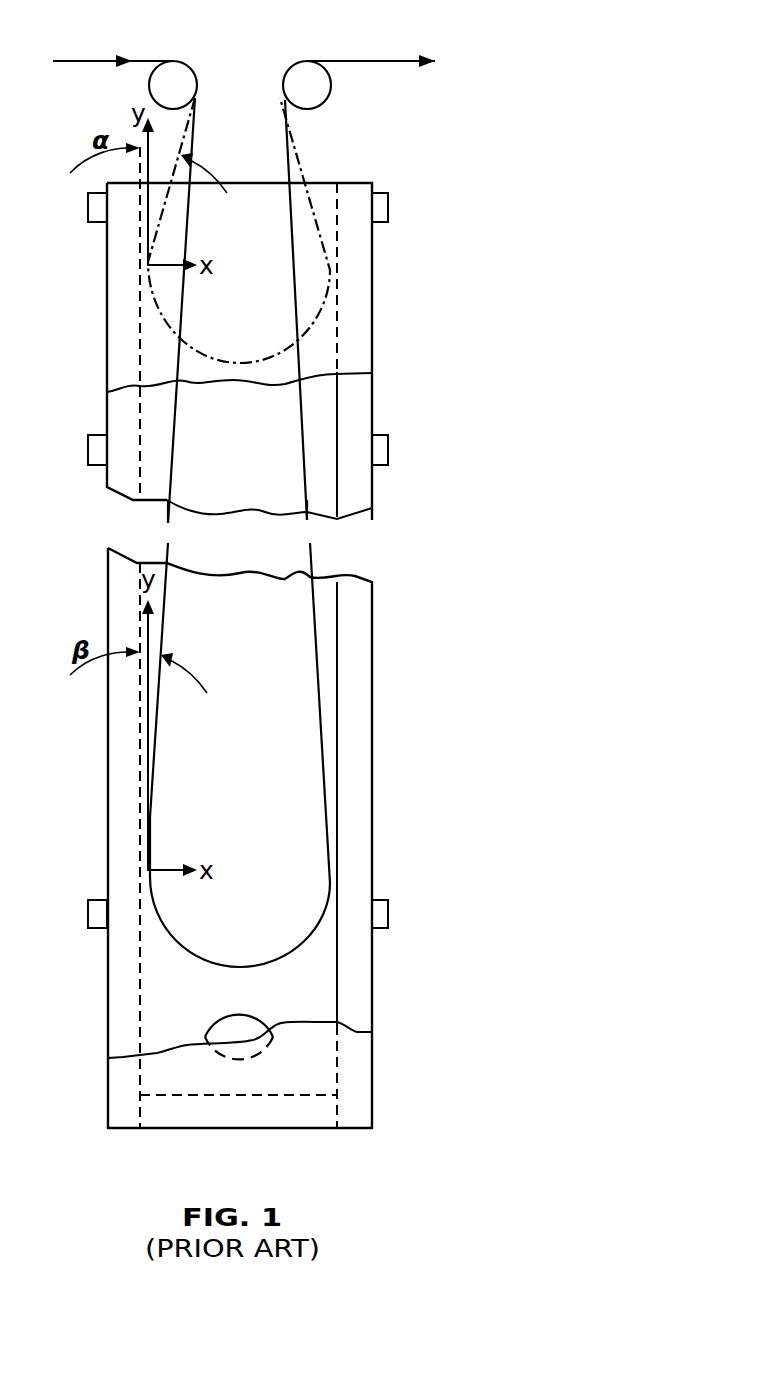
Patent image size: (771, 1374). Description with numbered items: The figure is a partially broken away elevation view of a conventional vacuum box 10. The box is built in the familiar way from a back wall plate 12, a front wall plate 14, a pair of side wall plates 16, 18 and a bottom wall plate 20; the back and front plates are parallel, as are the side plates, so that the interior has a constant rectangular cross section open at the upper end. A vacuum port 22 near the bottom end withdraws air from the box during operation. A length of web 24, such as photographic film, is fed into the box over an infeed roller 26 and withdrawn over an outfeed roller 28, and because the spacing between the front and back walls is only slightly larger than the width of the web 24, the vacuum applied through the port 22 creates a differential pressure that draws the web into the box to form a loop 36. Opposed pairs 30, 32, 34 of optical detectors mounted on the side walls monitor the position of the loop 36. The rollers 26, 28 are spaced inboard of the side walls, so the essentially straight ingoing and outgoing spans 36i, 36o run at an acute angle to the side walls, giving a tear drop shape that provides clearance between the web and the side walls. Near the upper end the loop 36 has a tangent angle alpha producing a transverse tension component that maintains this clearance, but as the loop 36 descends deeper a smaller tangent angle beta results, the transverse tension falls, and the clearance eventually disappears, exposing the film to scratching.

The vacuum box 10 is at (300, 1158).
The back wall plate 12 is at (298, 978).
The front wall plate 14 is at (310, 282).
The side wall plate 16 is at (120, 418).
The side wall plate 18 is at (353, 378).
The bottom wall plate 20 is at (173, 1108).
The vacuum port 22 is at (227, 1033).
The web 24 is at (93, 60).
The infeed roller 26 is at (178, 72).
The outfeed roller 28 is at (297, 77).
The opposed pair of optical detectors 30 is at (393, 193).
The opposed pair of optical detectors 32 is at (92, 448).
The opposed pair of optical detectors 34 is at (97, 912).
The loop 36 is at (340, 323).
The ingoing span 36i is at (167, 505).
The outgoing span 36o is at (313, 523).